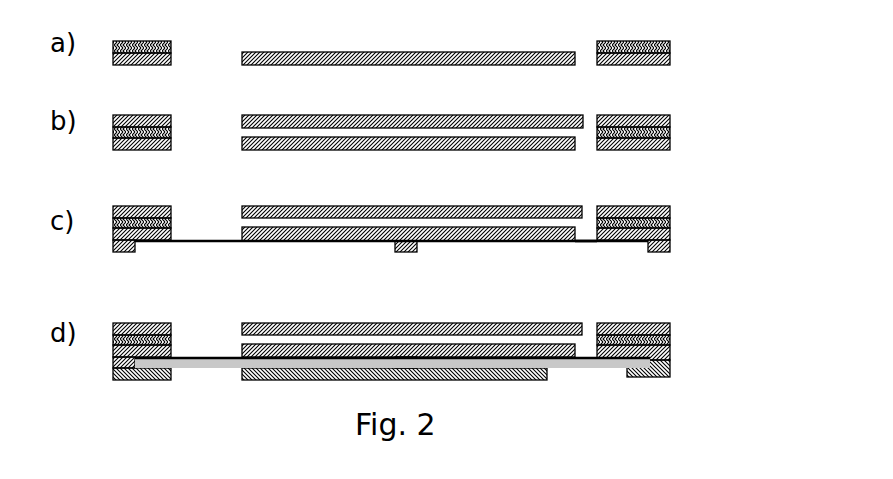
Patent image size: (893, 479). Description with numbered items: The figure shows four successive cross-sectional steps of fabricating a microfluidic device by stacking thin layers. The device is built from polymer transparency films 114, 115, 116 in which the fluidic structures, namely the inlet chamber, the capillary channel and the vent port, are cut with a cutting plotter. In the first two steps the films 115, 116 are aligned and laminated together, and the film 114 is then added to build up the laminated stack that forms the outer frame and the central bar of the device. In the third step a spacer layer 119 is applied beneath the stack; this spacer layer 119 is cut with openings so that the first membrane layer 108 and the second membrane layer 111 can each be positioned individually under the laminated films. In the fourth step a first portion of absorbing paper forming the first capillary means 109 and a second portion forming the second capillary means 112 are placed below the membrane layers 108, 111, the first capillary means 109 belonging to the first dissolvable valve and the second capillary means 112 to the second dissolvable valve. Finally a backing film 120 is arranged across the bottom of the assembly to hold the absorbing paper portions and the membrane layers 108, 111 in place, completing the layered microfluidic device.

The film 115 is at (670, 43).
The film 116 is at (670, 62).
The film 114 is at (670, 118).
The first membrane layer 108 is at (207, 242).
The spacer layer 119 is at (670, 245).
The second membrane layer 111 is at (587, 240).
The first capillary means 109 is at (207, 367).
The backing film 120 is at (670, 370).
The second capillary means 112 is at (582, 365).